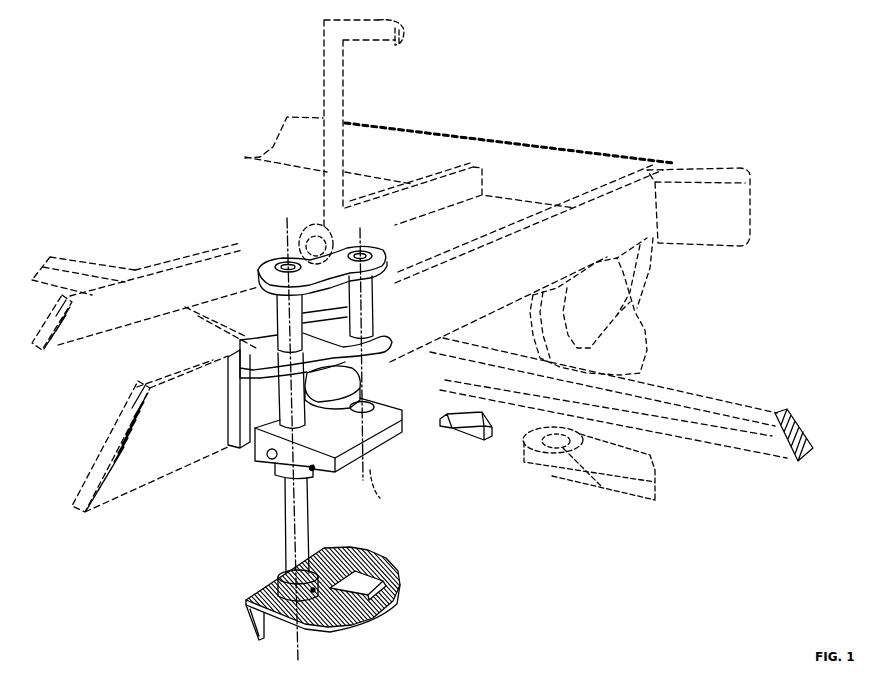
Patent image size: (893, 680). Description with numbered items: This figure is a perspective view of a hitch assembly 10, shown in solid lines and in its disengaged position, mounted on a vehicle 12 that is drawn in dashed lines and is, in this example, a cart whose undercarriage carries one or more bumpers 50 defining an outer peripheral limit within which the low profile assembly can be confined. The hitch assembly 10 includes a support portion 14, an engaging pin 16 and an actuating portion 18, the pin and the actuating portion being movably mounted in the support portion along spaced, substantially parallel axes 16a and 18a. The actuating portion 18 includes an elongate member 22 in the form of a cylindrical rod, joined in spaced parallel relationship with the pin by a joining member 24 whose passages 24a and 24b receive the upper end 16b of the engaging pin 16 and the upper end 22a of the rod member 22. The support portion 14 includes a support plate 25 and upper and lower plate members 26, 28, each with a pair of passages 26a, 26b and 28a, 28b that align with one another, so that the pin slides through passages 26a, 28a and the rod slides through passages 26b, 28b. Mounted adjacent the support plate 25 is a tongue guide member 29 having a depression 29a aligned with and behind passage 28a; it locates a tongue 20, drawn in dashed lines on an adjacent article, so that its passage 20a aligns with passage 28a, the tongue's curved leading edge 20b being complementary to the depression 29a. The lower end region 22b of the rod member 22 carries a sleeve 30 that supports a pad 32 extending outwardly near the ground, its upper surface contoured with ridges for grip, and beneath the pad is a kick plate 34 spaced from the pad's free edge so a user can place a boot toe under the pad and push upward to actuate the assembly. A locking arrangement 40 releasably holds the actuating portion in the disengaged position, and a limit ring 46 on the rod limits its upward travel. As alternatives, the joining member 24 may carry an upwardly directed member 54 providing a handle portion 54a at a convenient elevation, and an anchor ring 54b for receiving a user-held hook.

The hitch assembly 10 is at (390, 227).
The vehicle 12 is at (535, 133).
The support portion 14 is at (236, 340).
The engaging pin 16 is at (400, 300).
The axis 16a is at (372, 470).
The upper end 16b is at (388, 303).
The actuating portion 18 is at (264, 324).
The axis 18a is at (314, 648).
The tongue 20 is at (561, 481).
The passage 20a is at (605, 497).
The curved leading edge 20b is at (520, 445).
The elongate member 22 is at (272, 523).
The upper end 22a is at (256, 260).
The lower end region 22b is at (284, 550).
The joining member 24 is at (290, 268).
The passage 24a is at (352, 250).
The passage 24b is at (280, 262).
The support plate 25 is at (237, 362).
The upper plate member 26 is at (401, 402).
The passage 26a is at (367, 343).
The passage 26b is at (243, 383).
The lower plate member 28 is at (325, 438).
The passage 28a is at (323, 390).
The passage 28b is at (255, 450).
The tongue guide member 29 is at (357, 437).
The depression 29a is at (350, 430).
The sleeve 30 is at (276, 584).
The pad 32 is at (405, 587).
The kick plate 34 is at (244, 623).
The locking arrangement 40 is at (264, 484).
The limit ring 46 is at (315, 469).
The bumper 50 is at (703, 167).
The upwardly directed member 54 is at (322, 62).
The handle portion 54a is at (388, 26).
The anchor ring 54b is at (308, 246).